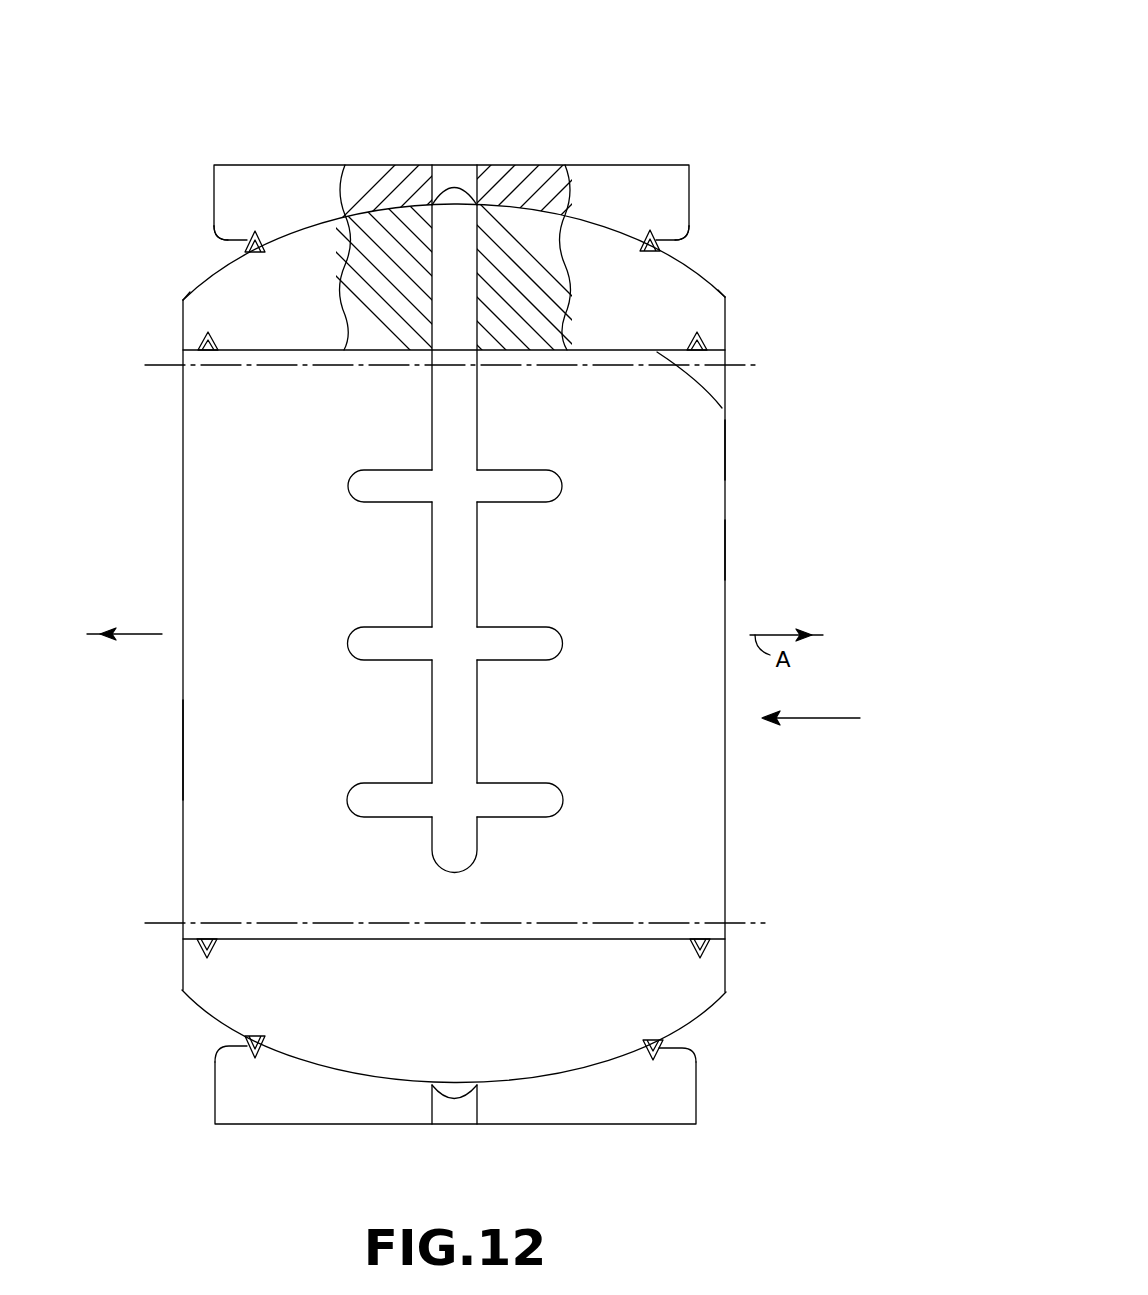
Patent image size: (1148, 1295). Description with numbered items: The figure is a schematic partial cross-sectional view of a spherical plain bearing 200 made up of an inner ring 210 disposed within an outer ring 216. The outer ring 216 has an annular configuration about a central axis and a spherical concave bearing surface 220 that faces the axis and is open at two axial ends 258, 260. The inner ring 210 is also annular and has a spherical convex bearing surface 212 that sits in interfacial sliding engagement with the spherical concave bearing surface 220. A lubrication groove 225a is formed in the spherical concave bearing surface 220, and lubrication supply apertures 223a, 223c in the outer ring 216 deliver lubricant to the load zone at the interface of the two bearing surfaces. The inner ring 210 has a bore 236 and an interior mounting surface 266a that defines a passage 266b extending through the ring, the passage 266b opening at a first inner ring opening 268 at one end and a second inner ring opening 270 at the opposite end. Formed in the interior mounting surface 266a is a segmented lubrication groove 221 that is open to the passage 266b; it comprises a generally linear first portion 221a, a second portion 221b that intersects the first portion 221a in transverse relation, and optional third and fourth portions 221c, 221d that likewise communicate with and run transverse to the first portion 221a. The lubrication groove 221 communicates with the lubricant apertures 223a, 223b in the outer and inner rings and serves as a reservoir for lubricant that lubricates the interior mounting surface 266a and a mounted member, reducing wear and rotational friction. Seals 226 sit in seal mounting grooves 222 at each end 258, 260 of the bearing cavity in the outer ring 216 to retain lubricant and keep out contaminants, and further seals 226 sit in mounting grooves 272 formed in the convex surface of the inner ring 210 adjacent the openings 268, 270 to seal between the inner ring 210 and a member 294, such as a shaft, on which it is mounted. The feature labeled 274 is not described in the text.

The spherical plain bearing 200 is at (730, 38).
The inner ring 210 is at (563, 986).
The spherical convex bearing surface 212 is at (184, 292).
The outer ring 216 is at (692, 190).
The spherical concave bearing surface 220 is at (593, 217).
The segmented lubrication groove 221 is at (493, 519).
The first portion 221a is at (430, 558).
The second portion 221b is at (535, 469).
The third portion 221c is at (543, 662).
The fourth portion 221d is at (535, 782).
The seal mounting grooves 222 is at (245, 230).
The lubrication supply aperture 223a is at (438, 176).
The lubricant aperture 223b is at (450, 303).
The lubrication supply aperture 223c is at (432, 1110).
The lubrication groove 225a is at (456, 197).
The seals 226 is at (248, 248).
The bore 236 is at (842, 717).
The axial end 258 is at (677, 257).
The axial end 260 is at (225, 252).
The interior mounting surface 266a is at (722, 408).
The passage 266b is at (685, 485).
The first inner ring opening 268 is at (712, 537).
The second inner ring opening 270 is at (193, 745).
The mounting grooves 272 is at (700, 942).
The upper tab 274 is at (211, 352).
The member 294 is at (745, 365).